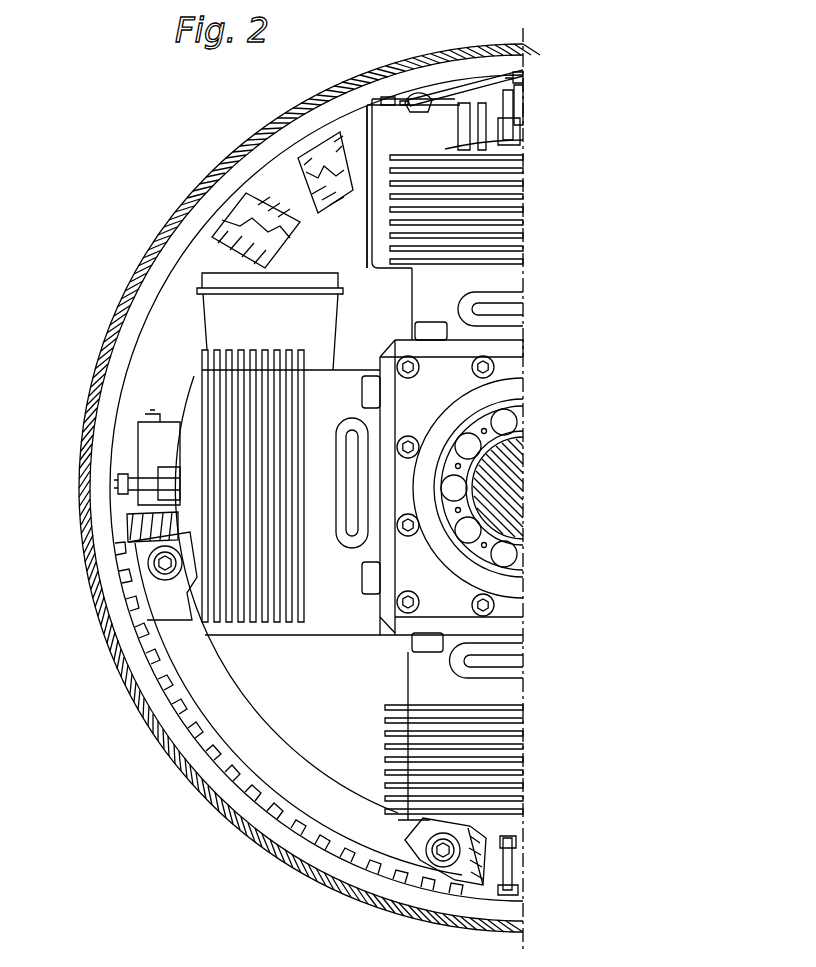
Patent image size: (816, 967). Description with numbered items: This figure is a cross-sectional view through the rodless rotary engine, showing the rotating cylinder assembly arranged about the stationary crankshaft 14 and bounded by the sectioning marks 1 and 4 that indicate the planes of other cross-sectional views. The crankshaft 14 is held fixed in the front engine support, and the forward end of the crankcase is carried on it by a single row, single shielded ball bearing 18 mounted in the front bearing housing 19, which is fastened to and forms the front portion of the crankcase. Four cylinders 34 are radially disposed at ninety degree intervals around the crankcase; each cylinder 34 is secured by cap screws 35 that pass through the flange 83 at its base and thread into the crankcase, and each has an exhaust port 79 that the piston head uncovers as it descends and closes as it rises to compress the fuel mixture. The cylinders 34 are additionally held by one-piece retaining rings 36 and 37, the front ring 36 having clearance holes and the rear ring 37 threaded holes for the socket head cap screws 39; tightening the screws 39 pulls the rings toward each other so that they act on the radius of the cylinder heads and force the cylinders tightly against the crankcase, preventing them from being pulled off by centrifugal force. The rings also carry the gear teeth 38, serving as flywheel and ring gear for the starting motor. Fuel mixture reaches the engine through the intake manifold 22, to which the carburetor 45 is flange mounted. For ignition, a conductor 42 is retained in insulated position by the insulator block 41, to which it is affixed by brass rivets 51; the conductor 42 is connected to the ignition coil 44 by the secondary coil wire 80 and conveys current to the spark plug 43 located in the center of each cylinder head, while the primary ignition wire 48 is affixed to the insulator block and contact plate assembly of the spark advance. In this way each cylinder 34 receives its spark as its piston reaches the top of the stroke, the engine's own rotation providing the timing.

The section line indicator 1 is at (152, 70).
The section line arrows 4 is at (523, 947).
The crankshaft 14 is at (512, 478).
The front ball bearing 18 is at (497, 556).
The front bearing housing 19 is at (505, 376).
The intake manifold 22 is at (296, 639).
The cylinders 34 is at (522, 218).
The cap screws 35 is at (431, 322).
The front retaining ring 36 is at (243, 752).
The rear retaining ring 37 is at (130, 526).
The gear teeth 38 is at (228, 778).
The cap screws 39 is at (166, 580).
The insulator block 41 is at (510, 94).
The conductor 42 is at (523, 78).
The spark plug 43 is at (125, 483).
The ignition coil 44 is at (374, 222).
The carburetor 45 is at (168, 422).
The primary ignition wire 48 is at (462, 126).
The brass rivets 51 is at (518, 64).
The exhaust port 79 is at (506, 309).
The secondary coil wire 80 is at (428, 104).
The flange 83 is at (380, 355).